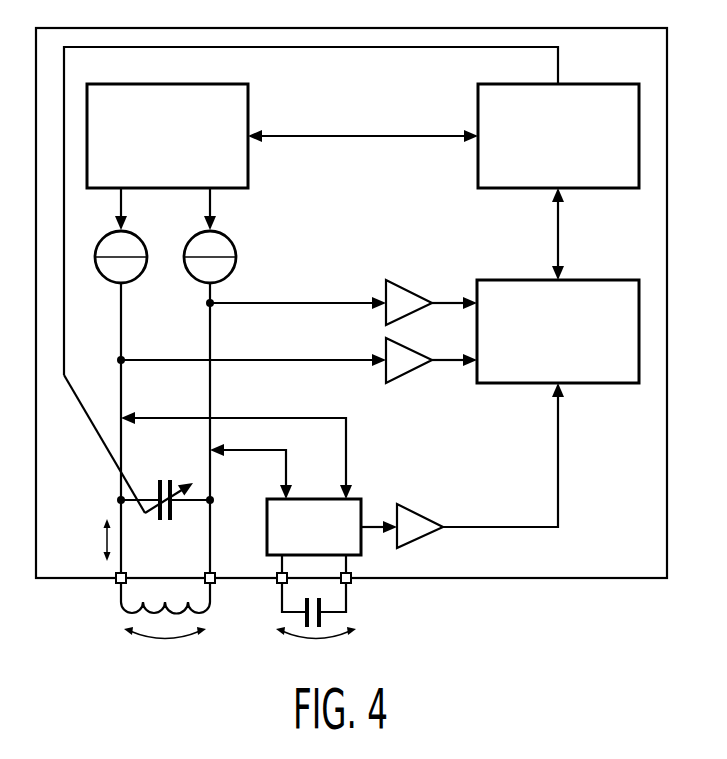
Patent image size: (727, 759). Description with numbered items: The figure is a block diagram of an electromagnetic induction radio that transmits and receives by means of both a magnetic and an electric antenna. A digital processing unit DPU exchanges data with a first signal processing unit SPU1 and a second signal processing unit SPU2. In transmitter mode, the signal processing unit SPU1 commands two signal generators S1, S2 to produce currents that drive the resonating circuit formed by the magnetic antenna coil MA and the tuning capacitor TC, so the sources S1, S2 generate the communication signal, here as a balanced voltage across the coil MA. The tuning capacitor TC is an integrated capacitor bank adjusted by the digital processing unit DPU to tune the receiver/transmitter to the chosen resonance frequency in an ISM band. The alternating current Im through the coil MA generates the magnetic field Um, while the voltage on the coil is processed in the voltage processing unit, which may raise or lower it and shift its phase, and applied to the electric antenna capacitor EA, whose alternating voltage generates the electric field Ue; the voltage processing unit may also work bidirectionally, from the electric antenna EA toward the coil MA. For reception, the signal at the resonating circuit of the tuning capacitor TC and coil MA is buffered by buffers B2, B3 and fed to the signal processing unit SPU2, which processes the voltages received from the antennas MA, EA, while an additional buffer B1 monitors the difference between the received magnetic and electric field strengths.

The signal processing unit SPU1 is at (167, 136).
The digital processing unit DPU is at (558, 136).
The signal processing unit SPU2 is at (558, 331).
The signal generator S1 is at (115, 247).
The signal generator S2 is at (218, 247).
The buffer B1 is at (433, 522).
The buffer B2 is at (409, 373).
The buffer B3 is at (409, 290).
The tuning capacitor TC is at (165, 485).
The magnetic antenna coil MA is at (143, 602).
The electric antenna capacitor EA is at (340, 605).
The first alternating current Im is at (94, 540).
The magnetic field Um is at (165, 647).
The electric field Ue is at (316, 647).